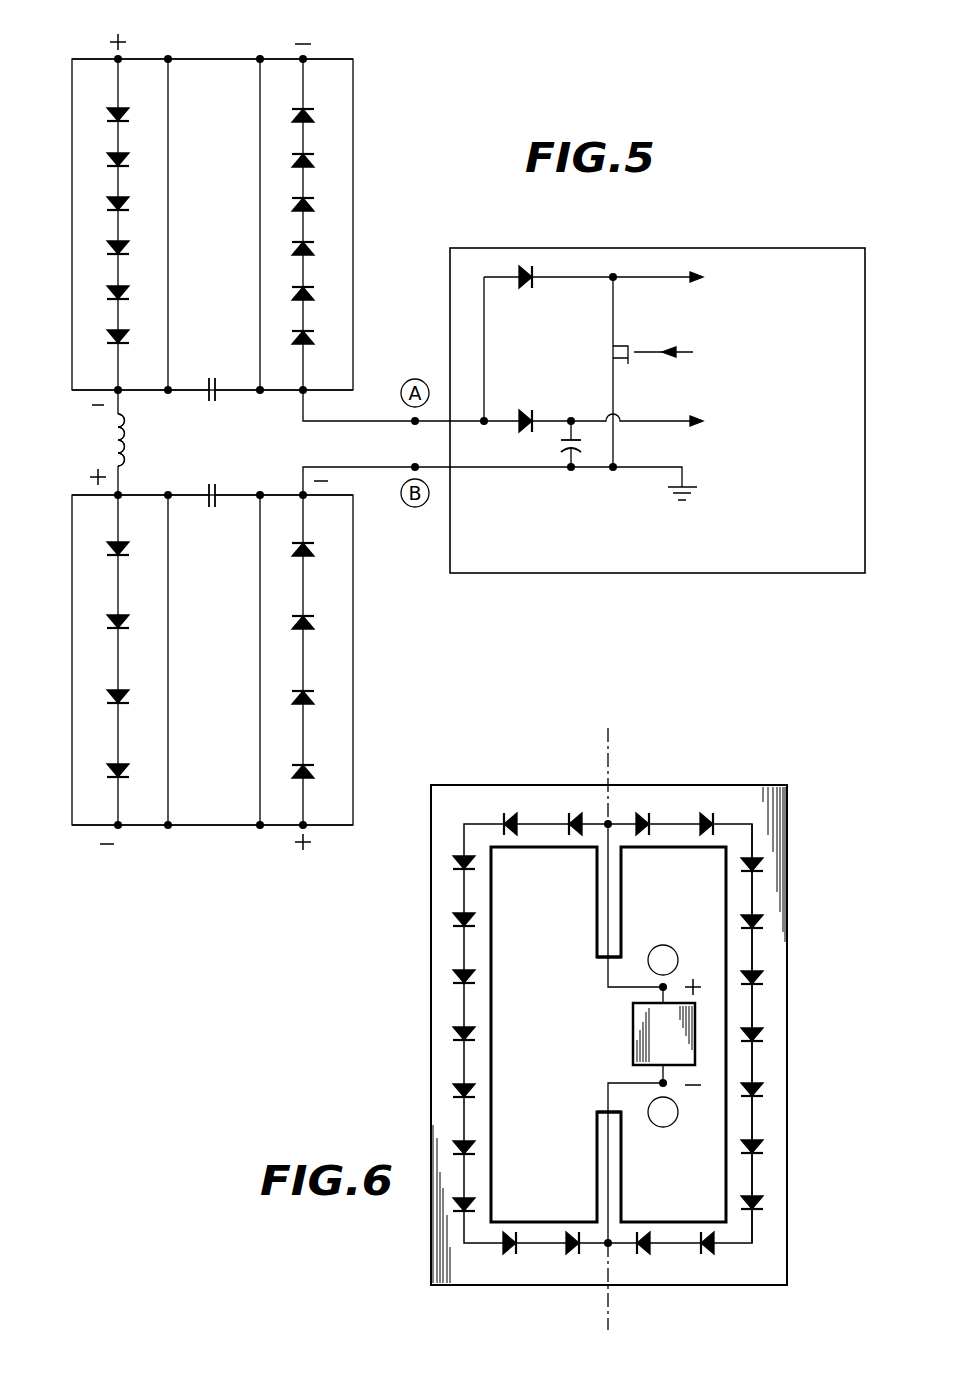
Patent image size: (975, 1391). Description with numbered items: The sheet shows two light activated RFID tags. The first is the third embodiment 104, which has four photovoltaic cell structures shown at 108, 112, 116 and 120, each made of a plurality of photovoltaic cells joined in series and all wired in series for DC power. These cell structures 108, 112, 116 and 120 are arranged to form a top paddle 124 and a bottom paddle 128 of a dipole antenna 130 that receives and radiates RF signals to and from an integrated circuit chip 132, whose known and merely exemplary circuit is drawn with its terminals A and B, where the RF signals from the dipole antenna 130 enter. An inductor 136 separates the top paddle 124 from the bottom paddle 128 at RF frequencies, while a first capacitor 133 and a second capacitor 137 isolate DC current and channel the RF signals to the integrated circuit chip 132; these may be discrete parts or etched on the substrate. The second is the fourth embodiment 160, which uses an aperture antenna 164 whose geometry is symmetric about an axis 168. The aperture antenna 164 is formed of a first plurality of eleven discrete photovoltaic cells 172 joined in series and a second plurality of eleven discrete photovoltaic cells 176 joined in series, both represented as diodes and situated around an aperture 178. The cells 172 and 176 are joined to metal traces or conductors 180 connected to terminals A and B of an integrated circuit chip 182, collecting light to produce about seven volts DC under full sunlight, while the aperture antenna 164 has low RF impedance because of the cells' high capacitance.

In FIG. 5, the third embodiment of the RFID tag 104 is at (657, 420).
In FIG. 5, the photovoltaic cell structure S1 108 is at (340, 745).
In FIG. 5, the photovoltaic cell structure S2 112 is at (83, 797).
In FIG. 5, the photovoltaic cell structure S3 116 is at (89, 95).
In FIG. 5, the photovoltaic cell structure S4 120 is at (342, 120).
In FIG. 5, the top paddle 124 is at (214, 37).
In FIG. 5, the bottom paddle 128 is at (214, 853).
In FIG. 5, the dipole antenna 130 is at (42, 452).
In FIG. 5, the integrated circuit chip 132 is at (748, 573).
In FIG. 5, the capacitor C1 133 is at (210, 374).
In FIG. 5, the inductor L1 136 is at (129, 438).
In FIG. 5, the capacitor C2 137 is at (214, 521).
In FIG. 6, the fourth embodiment of the RFID tag 160 is at (607, 1027).
In FIG. 6, the aperture antenna 164 is at (742, 813).
In FIG. 6, the axis 168 is at (608, 743).
In FIG. 6, the first plurality of photovoltaic cells 172 is at (758, 1090).
In FIG. 6, the second plurality of photovoltaic cells 176 is at (455, 1033).
In FIG. 6, the aperture 178 is at (685, 903).
In FIG. 6, the metal traces or conductors 180 is at (602, 1126).
In FIG. 6, the integrated circuit chip 182 is at (695, 1033).